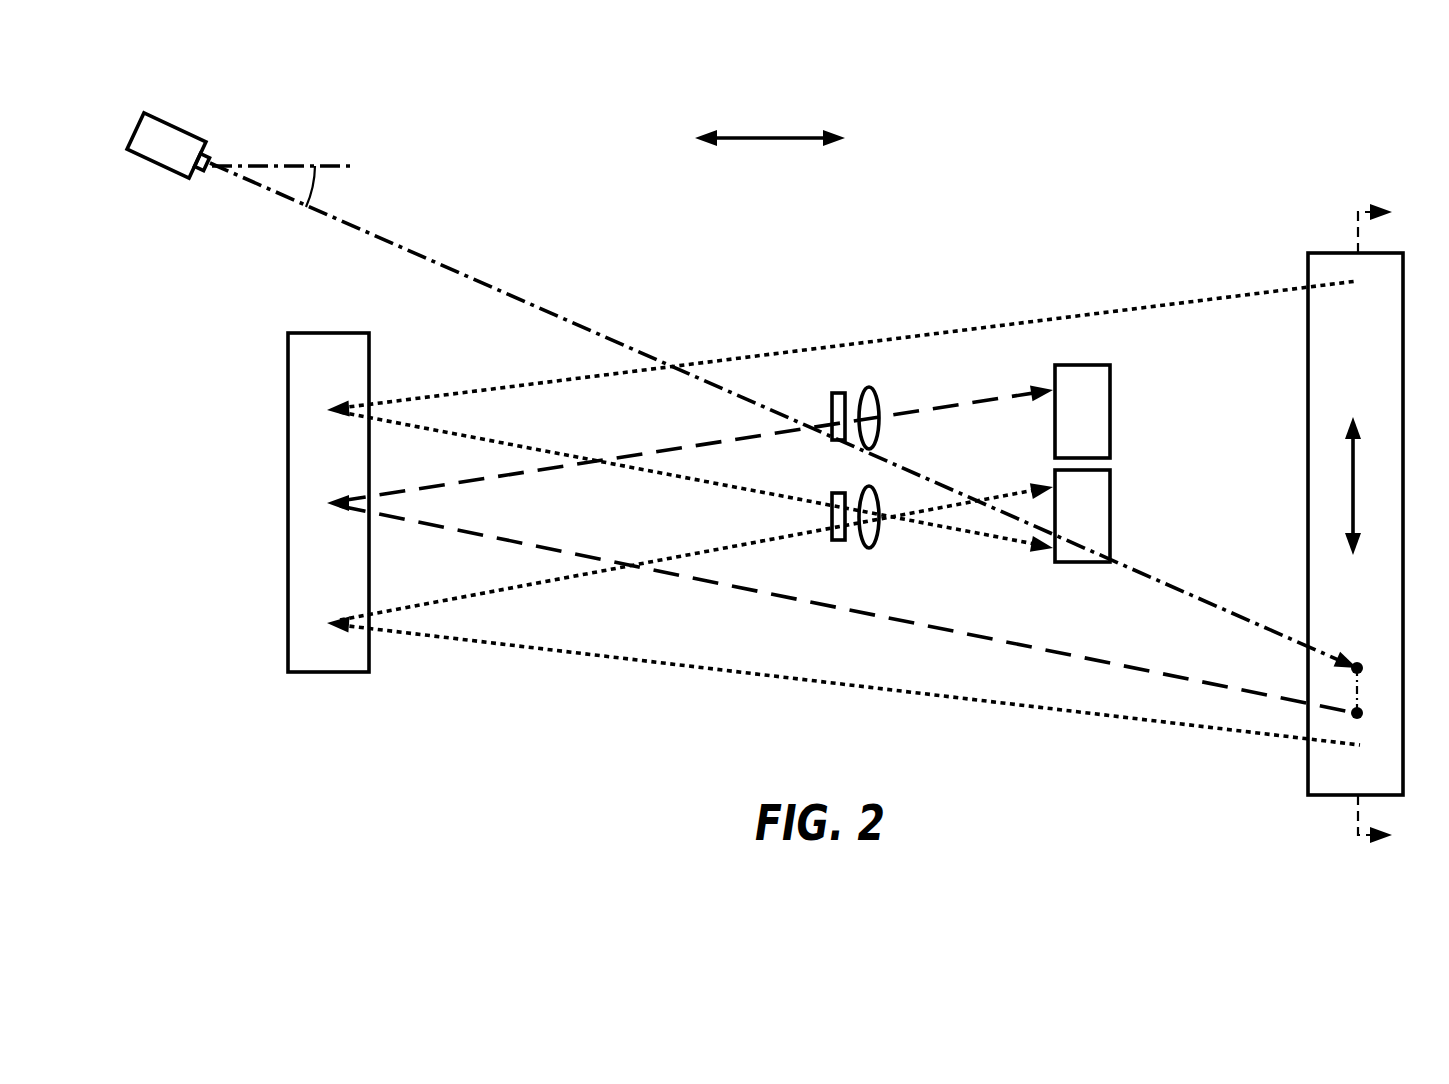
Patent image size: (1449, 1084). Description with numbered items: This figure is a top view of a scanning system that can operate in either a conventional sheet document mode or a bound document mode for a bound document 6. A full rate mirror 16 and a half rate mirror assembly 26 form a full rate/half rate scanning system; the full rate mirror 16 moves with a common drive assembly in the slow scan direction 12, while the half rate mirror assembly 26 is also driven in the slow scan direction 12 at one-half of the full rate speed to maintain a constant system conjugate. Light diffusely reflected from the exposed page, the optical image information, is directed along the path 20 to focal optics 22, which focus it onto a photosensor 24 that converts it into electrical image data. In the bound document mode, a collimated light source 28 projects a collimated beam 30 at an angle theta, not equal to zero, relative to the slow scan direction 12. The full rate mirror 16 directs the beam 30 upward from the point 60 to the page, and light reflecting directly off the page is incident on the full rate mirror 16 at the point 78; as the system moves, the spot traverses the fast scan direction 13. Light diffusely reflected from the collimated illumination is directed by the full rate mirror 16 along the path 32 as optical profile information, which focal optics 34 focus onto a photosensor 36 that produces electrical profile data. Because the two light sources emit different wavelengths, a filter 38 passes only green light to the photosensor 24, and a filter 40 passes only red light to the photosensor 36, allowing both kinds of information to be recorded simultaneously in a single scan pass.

The bound document 6 is at (1387, 524).
The slow scan direction 12 is at (765, 140).
The fast scan direction 13 is at (1352, 490).
The full rate mirror 16 is at (1403, 370).
The optical image information path 20 is at (697, 485).
The focal optics 22 is at (872, 548).
The photosensor 24 is at (1080, 563).
The half rate mirror assembly 26 is at (288, 503).
The collimated light source 28 is at (173, 123).
The collimated beam 30 is at (520, 300).
The optical profile information path 32 is at (762, 593).
The focal optics 34 is at (872, 390).
The photosensor 36 is at (1093, 365).
The filter 38 is at (840, 545).
The filter 40 is at (838, 393).
The beam strike point on full rate mirror 60 is at (1362, 667).
The direct reflection incidence point 78 is at (1357, 713).